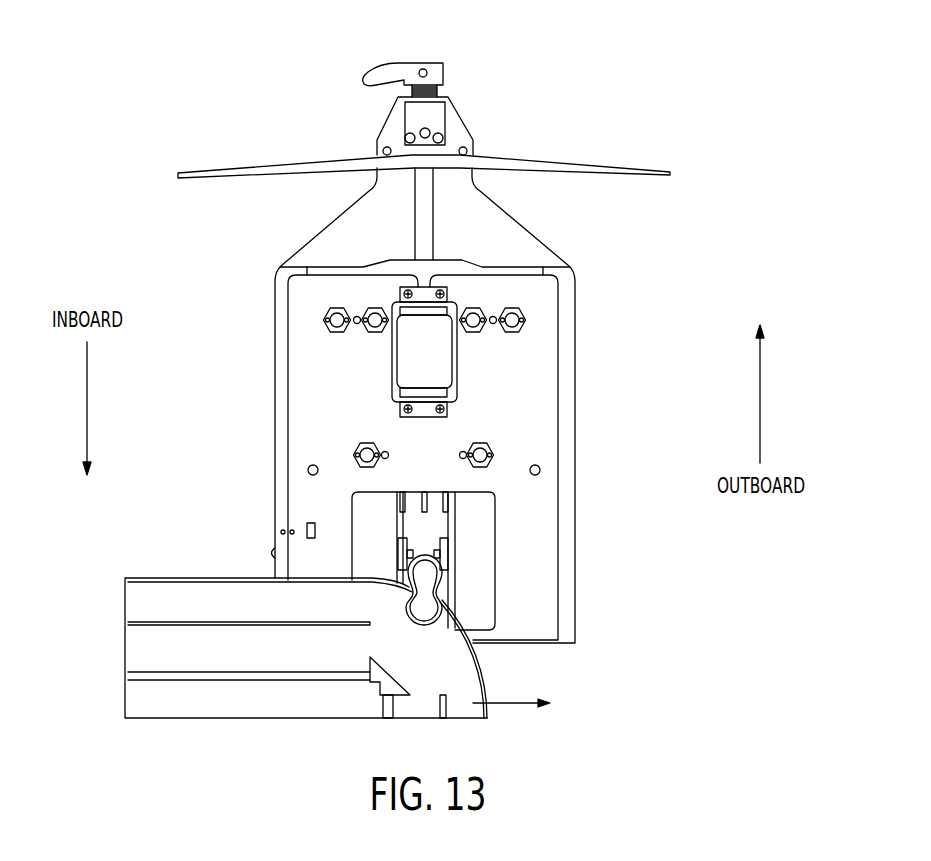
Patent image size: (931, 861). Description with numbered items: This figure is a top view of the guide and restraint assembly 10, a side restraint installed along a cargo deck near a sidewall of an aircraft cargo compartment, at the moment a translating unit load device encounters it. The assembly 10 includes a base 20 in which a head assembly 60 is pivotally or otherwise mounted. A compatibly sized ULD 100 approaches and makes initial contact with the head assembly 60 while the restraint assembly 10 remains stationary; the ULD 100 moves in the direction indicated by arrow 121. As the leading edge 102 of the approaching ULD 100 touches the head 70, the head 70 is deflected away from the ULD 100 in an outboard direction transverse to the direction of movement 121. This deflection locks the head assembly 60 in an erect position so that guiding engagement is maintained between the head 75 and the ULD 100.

The guide and restraint assembly 10 is at (578, 53).
The base 20 is at (275, 381).
The head assembly 60 is at (427, 533).
The head 70 is at (380, 535).
The head 75 is at (423, 625).
The ULD 100 is at (138, 650).
The leading edge 102 is at (463, 618).
The arrow 121 is at (505, 705).